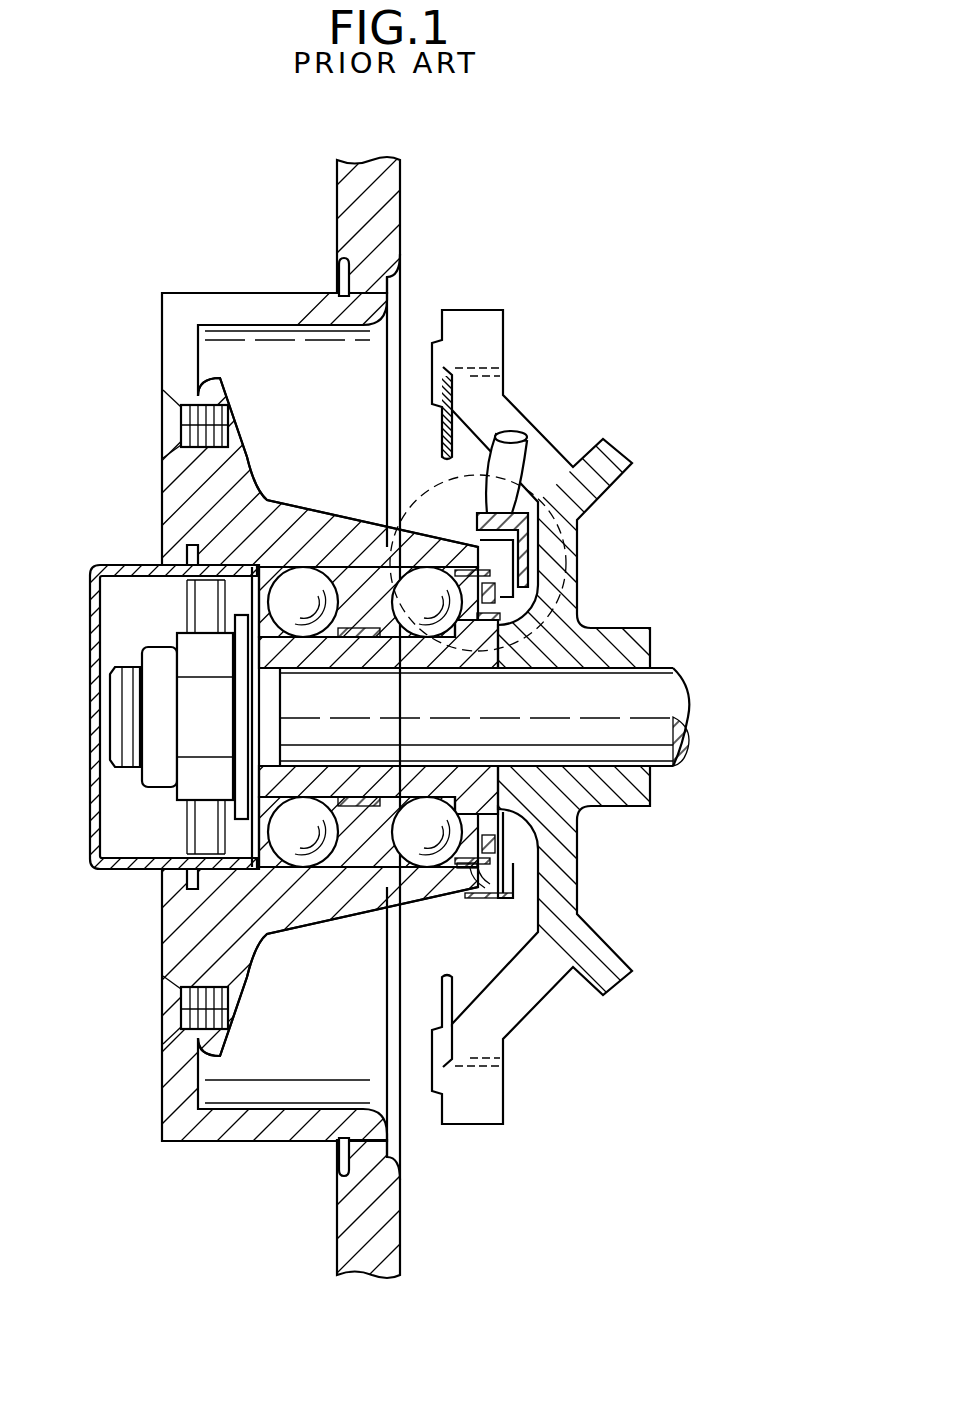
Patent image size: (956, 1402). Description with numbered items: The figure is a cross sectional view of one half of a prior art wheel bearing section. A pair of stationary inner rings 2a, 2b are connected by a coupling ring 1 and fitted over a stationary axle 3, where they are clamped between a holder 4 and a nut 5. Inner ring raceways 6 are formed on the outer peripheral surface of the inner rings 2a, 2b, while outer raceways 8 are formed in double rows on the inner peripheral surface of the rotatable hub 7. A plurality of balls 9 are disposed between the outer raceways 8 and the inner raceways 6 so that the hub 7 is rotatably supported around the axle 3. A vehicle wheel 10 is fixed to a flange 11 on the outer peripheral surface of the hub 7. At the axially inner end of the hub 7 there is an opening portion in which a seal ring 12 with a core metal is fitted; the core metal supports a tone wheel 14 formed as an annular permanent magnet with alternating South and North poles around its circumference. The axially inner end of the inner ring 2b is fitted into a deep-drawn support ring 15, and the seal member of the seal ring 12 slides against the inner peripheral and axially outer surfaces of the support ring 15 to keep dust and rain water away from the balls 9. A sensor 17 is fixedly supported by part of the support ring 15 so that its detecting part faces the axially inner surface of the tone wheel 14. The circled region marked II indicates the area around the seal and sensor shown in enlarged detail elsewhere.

The coupling ring 1 is at (355, 805).
The inner ring 2a is at (300, 783).
The inner ring 2b is at (422, 775).
The stationary axle 3 is at (660, 700).
The holder 4 is at (627, 640).
The nut 5 is at (195, 722).
The inner ring raceways 6 is at (478, 701).
The hub 7 is at (247, 472).
The outer raceways 8 is at (298, 855).
The balls 9 is at (300, 590).
The vehicle wheel 10 is at (357, 1252).
The flange 11 is at (218, 928).
The seal ring 12 is at (490, 897).
The tone wheel 14 is at (500, 838).
The support ring 15 is at (578, 521).
The sensor 17 is at (553, 552).
The detail view circle II is at (566, 552).